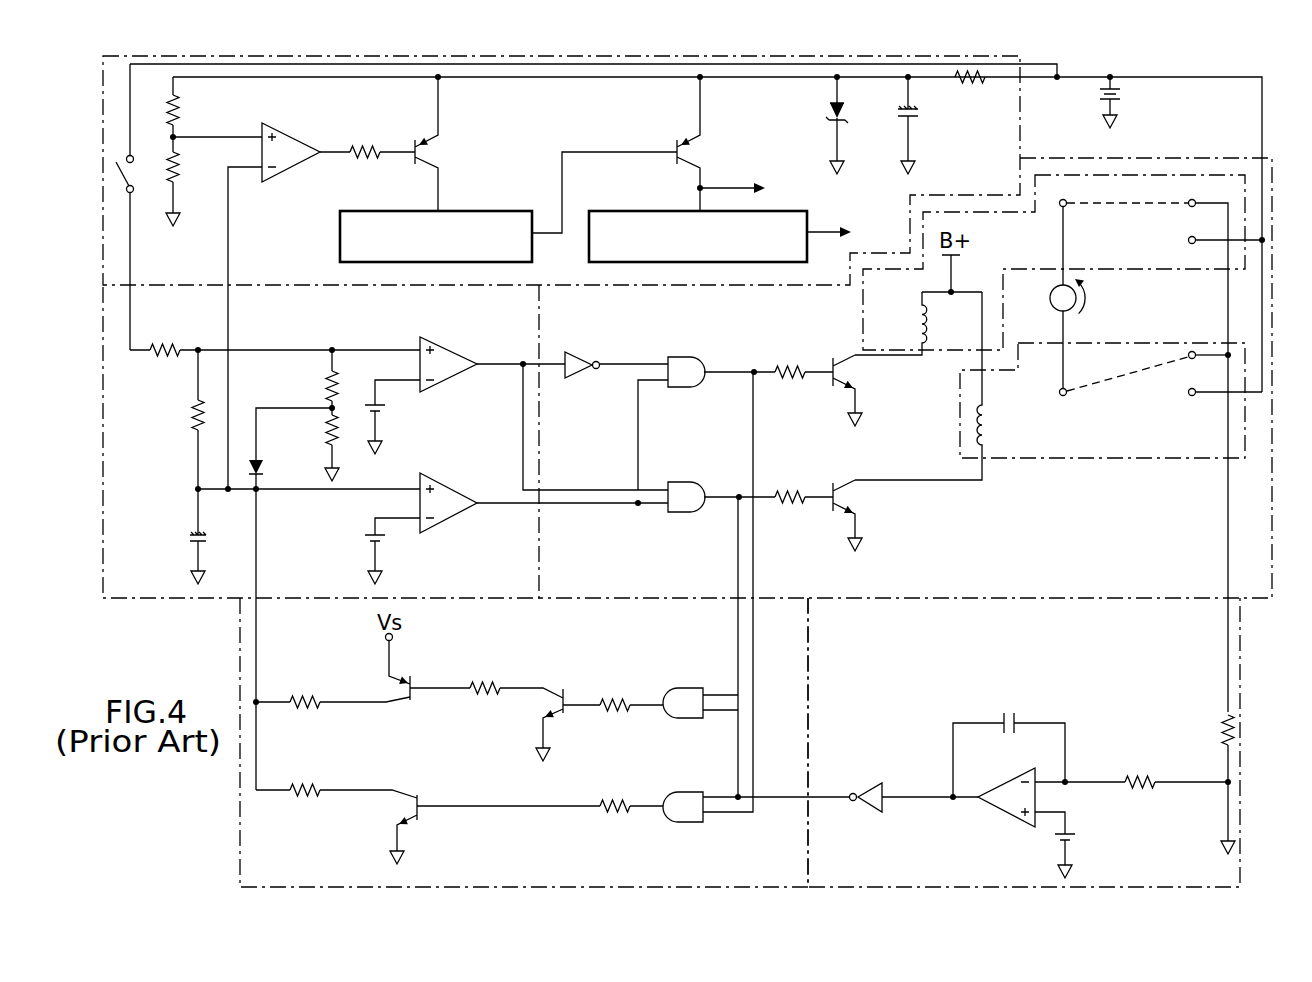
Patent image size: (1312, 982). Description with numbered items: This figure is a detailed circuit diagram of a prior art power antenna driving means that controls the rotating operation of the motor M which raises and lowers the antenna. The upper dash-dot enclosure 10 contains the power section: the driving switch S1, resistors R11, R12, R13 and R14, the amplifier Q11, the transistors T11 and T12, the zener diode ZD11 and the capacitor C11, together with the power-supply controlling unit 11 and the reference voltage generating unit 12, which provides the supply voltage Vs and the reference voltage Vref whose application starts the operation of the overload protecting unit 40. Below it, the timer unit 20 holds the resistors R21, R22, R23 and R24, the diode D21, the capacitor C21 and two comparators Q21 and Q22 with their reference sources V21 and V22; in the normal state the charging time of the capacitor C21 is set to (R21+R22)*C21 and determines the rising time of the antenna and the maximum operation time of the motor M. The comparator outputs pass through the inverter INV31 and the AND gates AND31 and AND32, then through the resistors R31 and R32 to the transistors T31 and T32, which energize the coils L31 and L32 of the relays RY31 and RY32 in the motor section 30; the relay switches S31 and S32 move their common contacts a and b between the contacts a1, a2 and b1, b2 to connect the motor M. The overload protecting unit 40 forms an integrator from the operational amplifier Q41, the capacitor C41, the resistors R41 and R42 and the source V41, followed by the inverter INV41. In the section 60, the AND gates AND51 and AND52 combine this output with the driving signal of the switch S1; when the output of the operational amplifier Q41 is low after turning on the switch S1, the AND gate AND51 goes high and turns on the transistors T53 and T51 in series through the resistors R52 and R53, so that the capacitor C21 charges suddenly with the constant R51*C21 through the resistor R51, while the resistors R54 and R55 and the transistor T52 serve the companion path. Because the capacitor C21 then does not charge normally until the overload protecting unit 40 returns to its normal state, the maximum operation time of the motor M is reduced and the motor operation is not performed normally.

The power supply unit 10 is at (1020, 123).
The power-supply controlling unit 11 is at (340, 233).
The reference voltage generating unit 12 is at (641, 211).
The timer unit 20 is at (138, 600).
The motor driving unit 30 is at (1241, 157).
The overload protecting unit 40 is at (1240, 673).
The gate control unit 60 is at (239, 813).
The driving switch S1 is at (138, 174).
The resistor R11 is at (195, 114).
The resistor R12 is at (193, 189).
The resistor R13 is at (363, 143).
The resistor R14 is at (967, 89).
The operational amplifier Q11 is at (292, 134).
The transistor T11 is at (446, 144).
The transistor T12 is at (710, 144).
The zener diode ZD11 is at (809, 125).
The capacitor C11 is at (933, 125).
The supply voltage output Vs is at (746, 191).
The reference voltage Vref is at (853, 233).
The relay RY31 is at (1179, 175).
The relay RY32 is at (1097, 460).
The relay switch S31 is at (1128, 222).
The relay switch S32 is at (1128, 379).
The common contact a is at (1049, 201).
The contact a1 is at (1205, 445).
The contact a2 is at (1221, 227).
The common contact b is at (1048, 391).
The contact b1 is at (1204, 370).
The contact b2 is at (1219, 406).
The motor M is at (1067, 298).
The relay coil L31 is at (891, 323).
The relay coil L32 is at (943, 386).
The transistor T31 is at (867, 390).
The transistor T32 is at (867, 515).
The resistor R31 is at (768, 362).
The resistor R32 is at (768, 488).
The AND gate AND31 is at (686, 360).
The AND gate AND32 is at (683, 485).
The inverter INV31 is at (583, 353).
The comparator Q21 is at (459, 372).
The comparator Q22 is at (455, 495).
The reference voltage source V21 is at (398, 417).
The reference voltage source V22 is at (371, 551).
The resistor R21 is at (275, 337).
The resistor R22 is at (177, 419).
The resistor R23 is at (310, 382).
The resistor R24 is at (311, 448).
The diode D21 is at (290, 448).
The capacitor C21 is at (175, 536).
The resistor R51 is at (333, 693).
The resistor R52 is at (513, 680).
The resistor R53 is at (628, 694).
The resistor R54 is at (336, 782).
The resistor R55 is at (628, 798).
The transistor T51 is at (410, 668).
The transistor T52 is at (478, 829).
The transistor T53 is at (553, 725).
The AND gate AND51 is at (686, 691).
The AND gate AND52 is at (686, 794).
The inverter INV41 is at (910, 784).
The operational amplifier Q41 is at (1012, 815).
The capacitor C41 is at (1009, 744).
The resistor R41 is at (1204, 784).
The resistor R42 is at (1131, 773).
The reference voltage source V41 is at (1079, 845).